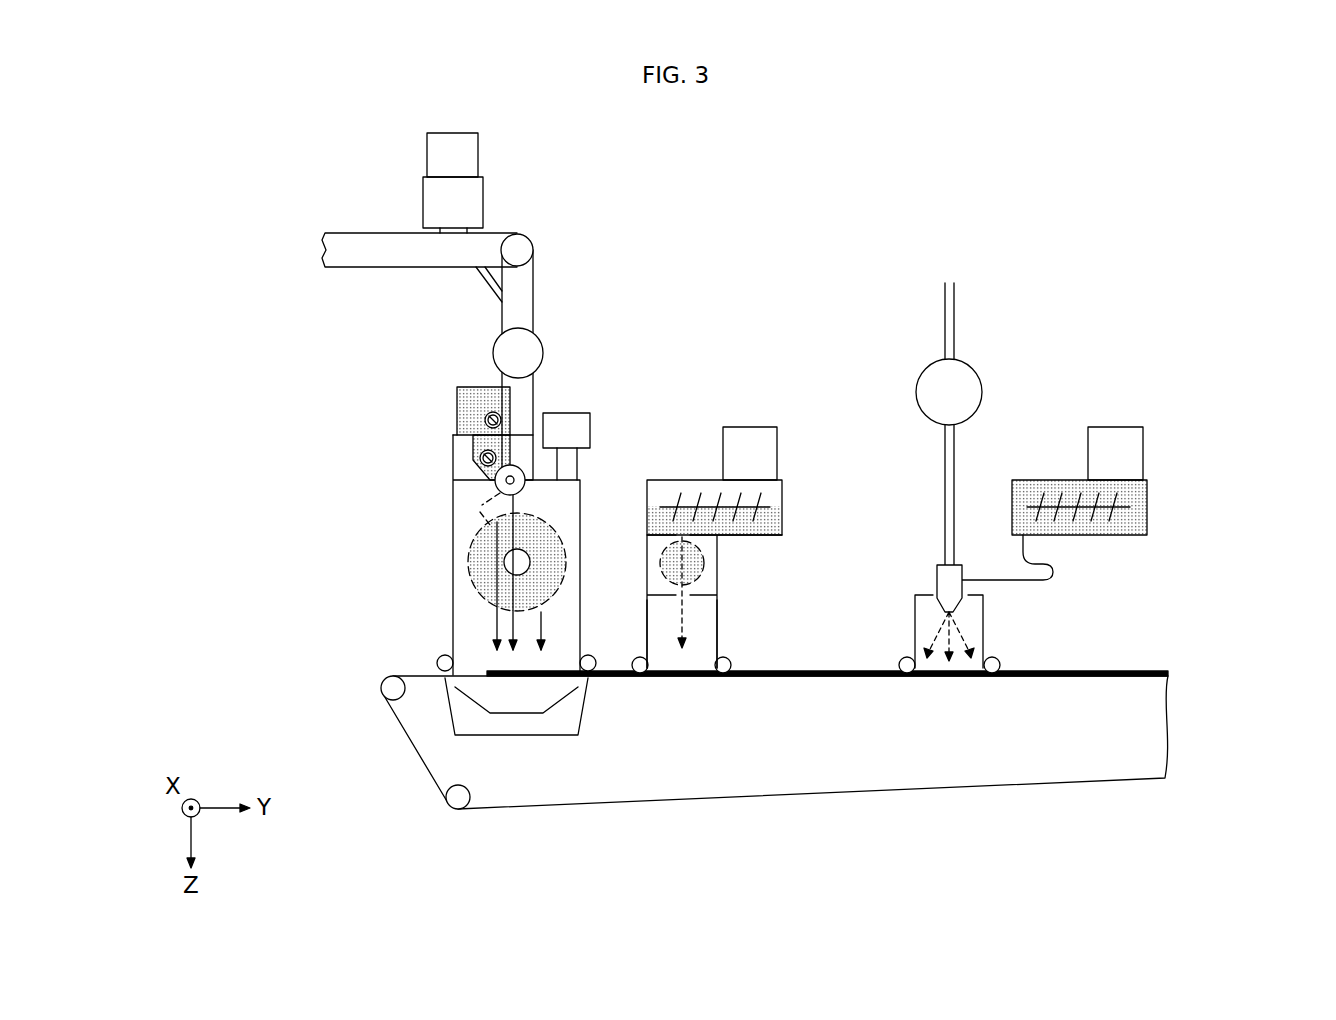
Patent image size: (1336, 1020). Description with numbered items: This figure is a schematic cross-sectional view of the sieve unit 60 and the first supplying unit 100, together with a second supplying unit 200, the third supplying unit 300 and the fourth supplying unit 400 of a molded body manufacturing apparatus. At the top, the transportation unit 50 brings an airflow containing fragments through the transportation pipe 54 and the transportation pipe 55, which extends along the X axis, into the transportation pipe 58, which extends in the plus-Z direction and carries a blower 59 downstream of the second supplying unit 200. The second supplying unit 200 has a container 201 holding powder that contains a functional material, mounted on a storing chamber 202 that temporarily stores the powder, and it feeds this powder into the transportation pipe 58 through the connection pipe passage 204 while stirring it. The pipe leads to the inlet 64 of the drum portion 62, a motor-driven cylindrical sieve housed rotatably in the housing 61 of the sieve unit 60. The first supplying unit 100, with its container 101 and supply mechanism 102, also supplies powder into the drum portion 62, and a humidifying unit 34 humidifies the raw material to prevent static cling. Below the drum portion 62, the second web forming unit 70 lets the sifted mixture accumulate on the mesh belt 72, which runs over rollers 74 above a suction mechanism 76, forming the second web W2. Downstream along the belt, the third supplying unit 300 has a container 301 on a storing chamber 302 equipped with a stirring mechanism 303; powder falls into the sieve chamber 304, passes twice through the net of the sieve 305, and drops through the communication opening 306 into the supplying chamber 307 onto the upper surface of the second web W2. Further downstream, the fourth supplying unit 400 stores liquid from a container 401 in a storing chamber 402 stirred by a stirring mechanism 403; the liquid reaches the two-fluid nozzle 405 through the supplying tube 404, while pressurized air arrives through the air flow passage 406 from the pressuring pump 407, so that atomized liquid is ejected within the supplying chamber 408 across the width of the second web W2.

The humidifying unit 34 is at (592, 428).
The transportation unit 50 is at (516, 325).
The transportation pipe 54 is at (333, 233).
The transportation pipe 55 is at (532, 244).
The transportation pipe 58 is at (535, 290).
The blower 59 is at (545, 345).
The sieve unit 60 is at (417, 555).
The housing 61 is at (453, 505).
The drum portion 62 is at (458, 596).
The inlet 64 is at (512, 556).
The second web forming unit 70 is at (782, 812).
The mesh belt 72 is at (427, 662).
The rollers 74 is at (383, 688).
The suction mechanism 76 is at (523, 715).
The first supplying unit 100 is at (380, 433).
The container 101 is at (457, 397).
The supply mechanism 102 is at (458, 457).
The second supplying unit 200 is at (542, 219).
The container 201 is at (479, 150).
The storing chamber 202 is at (484, 198).
The connection pipe passage 204 is at (490, 288).
The third supplying unit 300 is at (760, 503).
The container 301 is at (779, 440).
The storing chamber 302 is at (784, 488).
The stirring mechanism 303 is at (690, 500).
The sieve chamber 304 is at (719, 555).
The sieve 305 is at (705, 572).
The communication opening 306 is at (685, 610).
The supplying chamber 307 is at (719, 645).
The fourth supplying unit 400 is at (1078, 462).
The container 401 is at (1145, 446).
The storing chamber 402 is at (1149, 492).
The stirring mechanism 403 is at (1057, 495).
The supplying tube 404 is at (1055, 566).
The nozzle 405 is at (963, 610).
The air flow passage 406 is at (956, 300).
The pressuring pump 407 is at (983, 378).
The supplying chamber 408 is at (985, 648).
The second web W2 is at (1128, 672).